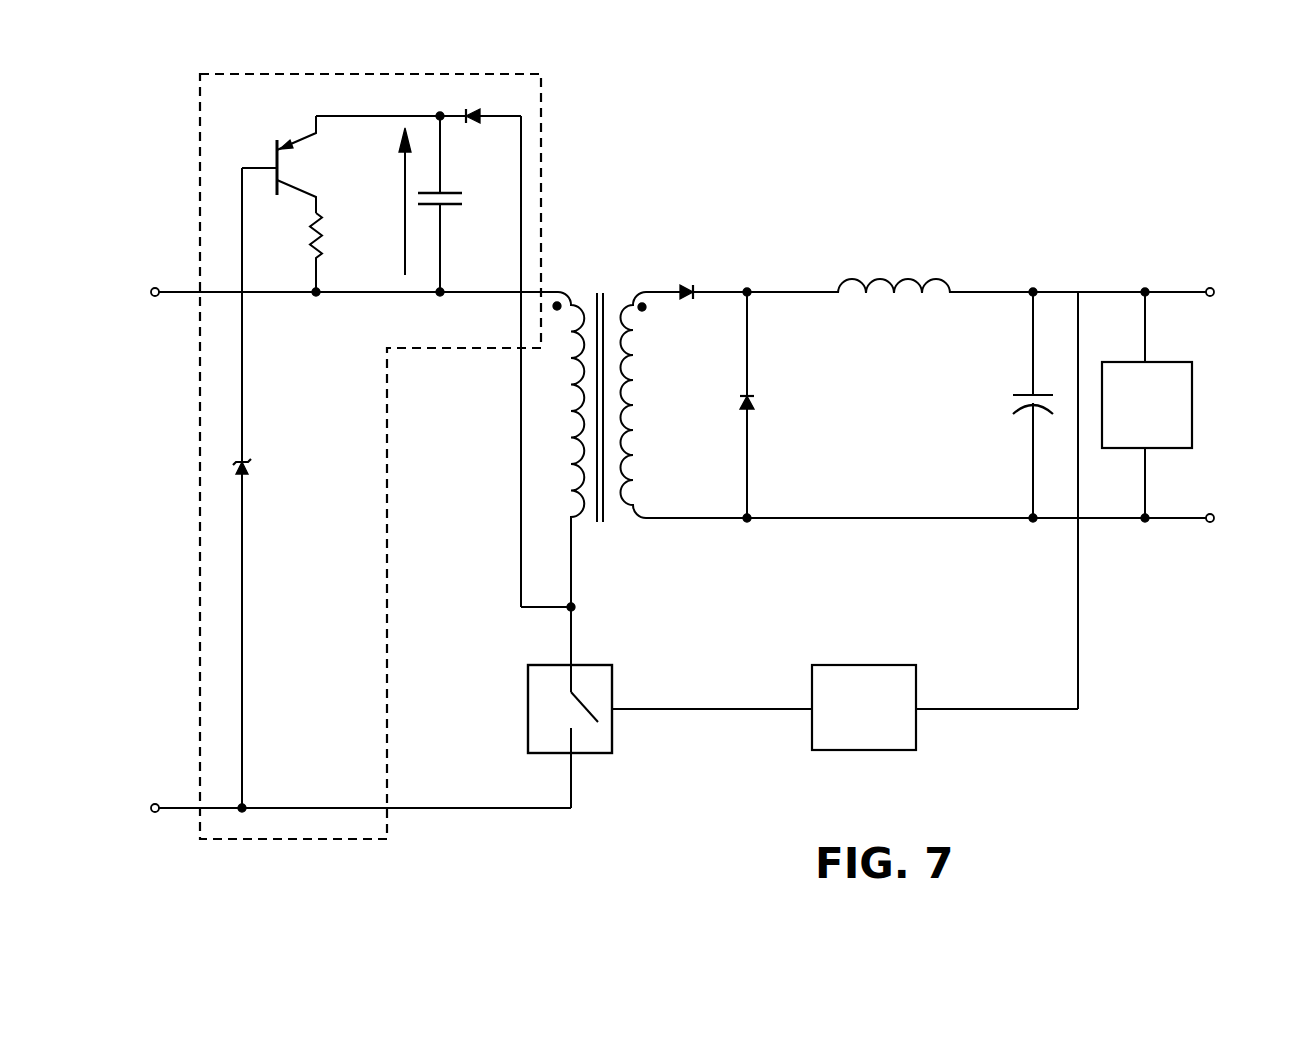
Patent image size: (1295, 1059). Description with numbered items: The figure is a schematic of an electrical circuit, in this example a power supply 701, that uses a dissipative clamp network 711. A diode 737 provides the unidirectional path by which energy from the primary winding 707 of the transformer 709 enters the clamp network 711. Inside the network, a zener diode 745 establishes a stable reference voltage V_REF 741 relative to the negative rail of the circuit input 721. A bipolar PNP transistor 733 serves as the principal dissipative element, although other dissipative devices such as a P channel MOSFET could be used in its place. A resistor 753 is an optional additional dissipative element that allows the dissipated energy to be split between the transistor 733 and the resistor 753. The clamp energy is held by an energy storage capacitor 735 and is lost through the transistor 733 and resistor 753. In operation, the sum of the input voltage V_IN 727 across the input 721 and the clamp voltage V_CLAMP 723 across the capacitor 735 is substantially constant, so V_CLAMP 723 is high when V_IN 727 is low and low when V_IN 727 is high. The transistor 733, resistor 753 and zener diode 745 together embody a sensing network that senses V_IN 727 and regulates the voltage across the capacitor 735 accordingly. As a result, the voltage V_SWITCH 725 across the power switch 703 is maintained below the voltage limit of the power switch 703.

The power supply 701 is at (796, 58).
The power switch Q1 703 is at (605, 737).
The primary winding 707 is at (563, 469).
The transformer 709 is at (610, 289).
The dissipative clamp network 711 is at (564, 175).
The input 721 is at (149, 305).
The clamp voltage V_CLAMP 723 is at (386, 175).
The switch voltage V_SWITCH 725 is at (456, 680).
The input voltage V_IN 727 is at (132, 527).
The bipolar PNP transistor Q2 733 is at (266, 110).
The capacitor 735 is at (479, 179).
The diode D3 737 is at (460, 99).
The reference voltage V_REF 741 is at (212, 174).
The zener diode VR1 745 is at (301, 441).
The resistor R1 753 is at (303, 257).